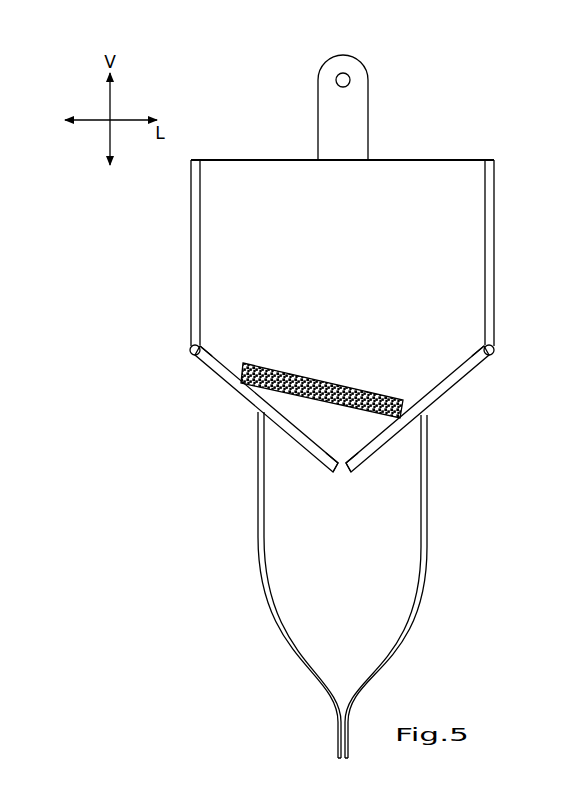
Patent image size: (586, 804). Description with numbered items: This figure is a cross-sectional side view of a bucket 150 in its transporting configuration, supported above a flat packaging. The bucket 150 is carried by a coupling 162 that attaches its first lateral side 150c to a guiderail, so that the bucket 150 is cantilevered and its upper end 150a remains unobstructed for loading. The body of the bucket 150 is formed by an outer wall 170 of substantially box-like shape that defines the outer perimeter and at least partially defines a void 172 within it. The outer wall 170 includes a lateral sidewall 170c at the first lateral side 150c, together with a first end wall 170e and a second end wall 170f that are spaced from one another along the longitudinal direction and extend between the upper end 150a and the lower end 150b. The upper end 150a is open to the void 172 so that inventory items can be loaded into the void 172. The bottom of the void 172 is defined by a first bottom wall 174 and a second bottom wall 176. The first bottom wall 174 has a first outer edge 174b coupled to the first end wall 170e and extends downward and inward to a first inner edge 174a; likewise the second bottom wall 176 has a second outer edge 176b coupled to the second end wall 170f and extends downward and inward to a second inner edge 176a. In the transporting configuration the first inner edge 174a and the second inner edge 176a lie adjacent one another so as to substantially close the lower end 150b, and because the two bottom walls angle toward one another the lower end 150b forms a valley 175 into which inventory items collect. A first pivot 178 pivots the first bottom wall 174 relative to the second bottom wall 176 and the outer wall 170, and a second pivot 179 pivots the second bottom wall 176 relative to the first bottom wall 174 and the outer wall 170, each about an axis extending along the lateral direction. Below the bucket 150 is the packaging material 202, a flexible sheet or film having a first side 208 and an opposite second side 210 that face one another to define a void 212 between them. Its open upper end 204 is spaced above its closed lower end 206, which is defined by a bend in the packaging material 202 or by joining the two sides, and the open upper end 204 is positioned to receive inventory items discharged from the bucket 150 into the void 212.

The bucket 150 is at (455, 105).
The upper end of the bucket 150a is at (215, 142).
The lower end of the bucket 150b is at (254, 478).
The first lateral side 150c is at (438, 190).
The coupling 162 is at (370, 83).
The outer wall 170 is at (191, 268).
The lateral sidewall 170c is at (380, 195).
The first end wall 170e is at (191, 205).
The second end wall 170f is at (495, 197).
The void 172 is at (276, 213).
The first bottom wall 174 is at (243, 405).
The first inner edge 174a is at (337, 475).
The first outer edge 174b is at (203, 363).
The valley 175 is at (342, 450).
The second bottom wall 176 is at (450, 393).
The second inner edge 176a is at (348, 476).
The second outer edge 176b is at (475, 372).
The first pivot 178 is at (190, 351).
The second pivot 179 is at (495, 350).
The packaging material 202 is at (250, 598).
The open upper end of the packaging material 204 is at (437, 419).
The closed lower end of the packaging material 206 is at (332, 762).
The first side of the packaging material 208 is at (290, 655).
The second side of the packaging material 210 is at (475, 618).
The void of the packaging material 212 is at (358, 607).